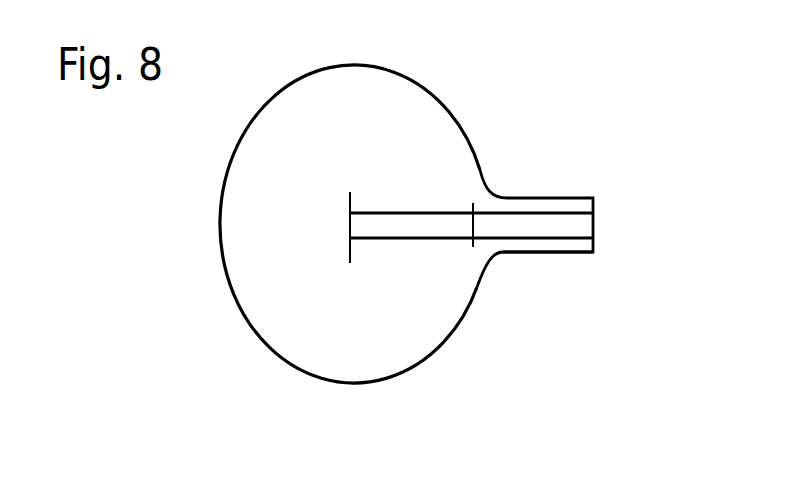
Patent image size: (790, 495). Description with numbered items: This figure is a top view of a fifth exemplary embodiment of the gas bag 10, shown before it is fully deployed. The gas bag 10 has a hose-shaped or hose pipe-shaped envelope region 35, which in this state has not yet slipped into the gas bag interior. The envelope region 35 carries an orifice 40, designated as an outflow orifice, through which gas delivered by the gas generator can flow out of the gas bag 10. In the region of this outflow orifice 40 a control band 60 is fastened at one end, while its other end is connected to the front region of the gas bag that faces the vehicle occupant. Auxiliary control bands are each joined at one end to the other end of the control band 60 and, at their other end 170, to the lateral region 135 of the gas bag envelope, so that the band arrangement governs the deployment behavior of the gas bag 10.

The gas bag 10 is at (458, 112).
The envelope region 35 is at (565, 197).
The orifice 40 is at (595, 230).
The control band 60 is at (493, 240).
The lateral region 135 is at (348, 230).
The other end 170 is at (405, 213).